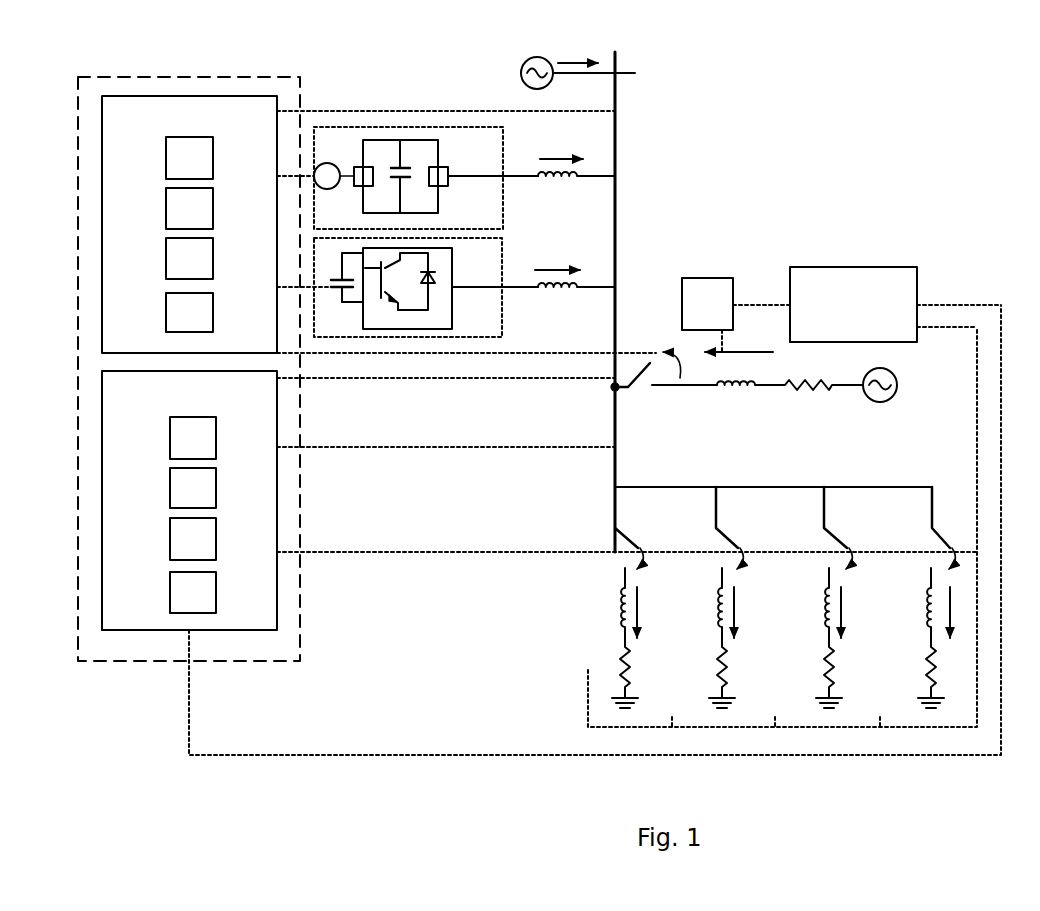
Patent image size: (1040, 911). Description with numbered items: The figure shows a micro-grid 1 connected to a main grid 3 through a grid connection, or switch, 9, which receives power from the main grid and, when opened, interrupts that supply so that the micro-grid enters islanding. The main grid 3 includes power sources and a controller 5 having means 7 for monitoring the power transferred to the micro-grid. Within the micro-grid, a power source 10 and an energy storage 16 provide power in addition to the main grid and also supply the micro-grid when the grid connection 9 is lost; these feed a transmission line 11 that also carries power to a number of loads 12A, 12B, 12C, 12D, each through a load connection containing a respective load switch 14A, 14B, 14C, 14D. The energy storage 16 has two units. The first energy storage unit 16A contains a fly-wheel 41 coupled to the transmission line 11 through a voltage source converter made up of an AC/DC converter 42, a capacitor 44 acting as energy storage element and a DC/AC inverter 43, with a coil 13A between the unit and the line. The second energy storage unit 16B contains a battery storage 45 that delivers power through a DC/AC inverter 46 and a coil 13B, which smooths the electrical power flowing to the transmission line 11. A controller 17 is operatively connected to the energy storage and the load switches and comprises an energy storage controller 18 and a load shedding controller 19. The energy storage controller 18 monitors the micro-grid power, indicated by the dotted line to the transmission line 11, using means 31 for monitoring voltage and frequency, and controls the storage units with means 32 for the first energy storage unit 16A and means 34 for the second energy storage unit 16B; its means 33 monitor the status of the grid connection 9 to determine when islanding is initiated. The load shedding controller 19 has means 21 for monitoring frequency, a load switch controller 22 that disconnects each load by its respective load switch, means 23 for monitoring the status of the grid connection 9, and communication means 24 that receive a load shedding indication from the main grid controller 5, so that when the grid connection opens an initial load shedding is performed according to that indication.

The micro-grid 1 is at (539, 383).
The main grid 3 is at (883, 425).
The controller 5 is at (872, 282).
The means for monitoring power 7 is at (717, 287).
The grid connection 9 is at (648, 341).
The power source 10 is at (523, 60).
The transmission line 11 is at (617, 223).
The load 12A is at (598, 652).
The load 12B is at (698, 657).
The load 12C is at (801, 657).
The load 12D is at (906, 657).
The coil 13A is at (546, 192).
The coil 13B is at (581, 300).
The load switch 14A is at (622, 530).
The load switch 14B is at (725, 530).
The load switch 14C is at (832, 530).
The load switch 14D is at (968, 520).
The energy storage 16 is at (446, 182).
The first energy storage unit 16A is at (430, 144).
The second energy storage unit 16B is at (446, 288).
The controller 17 is at (189, 336).
The energy storage controller 18 is at (146, 131).
The load shedding controller 19 is at (150, 410).
The means for monitoring frequency 21 is at (193, 438).
The load switch controller 22 is at (193, 488).
The means for monitoring the status of the grid connection 23 is at (193, 539).
The communication means 24 is at (193, 592).
The means for monitoring voltage and frequency 31 is at (189, 158).
The means for controlling the first energy storage unit 32 is at (189, 208).
The means for monitoring the grid connection 33 is at (189, 258).
The means for controlling the second energy storage unit 34 is at (189, 312).
The fly-wheel 41 is at (331, 165).
The AC/DC converter 42 is at (365, 187).
The DC/AC inverter 43 is at (443, 186).
The capacitor 44 is at (407, 167).
The battery storage 45 is at (333, 288).
The DC/AC inverter 46 is at (443, 267).